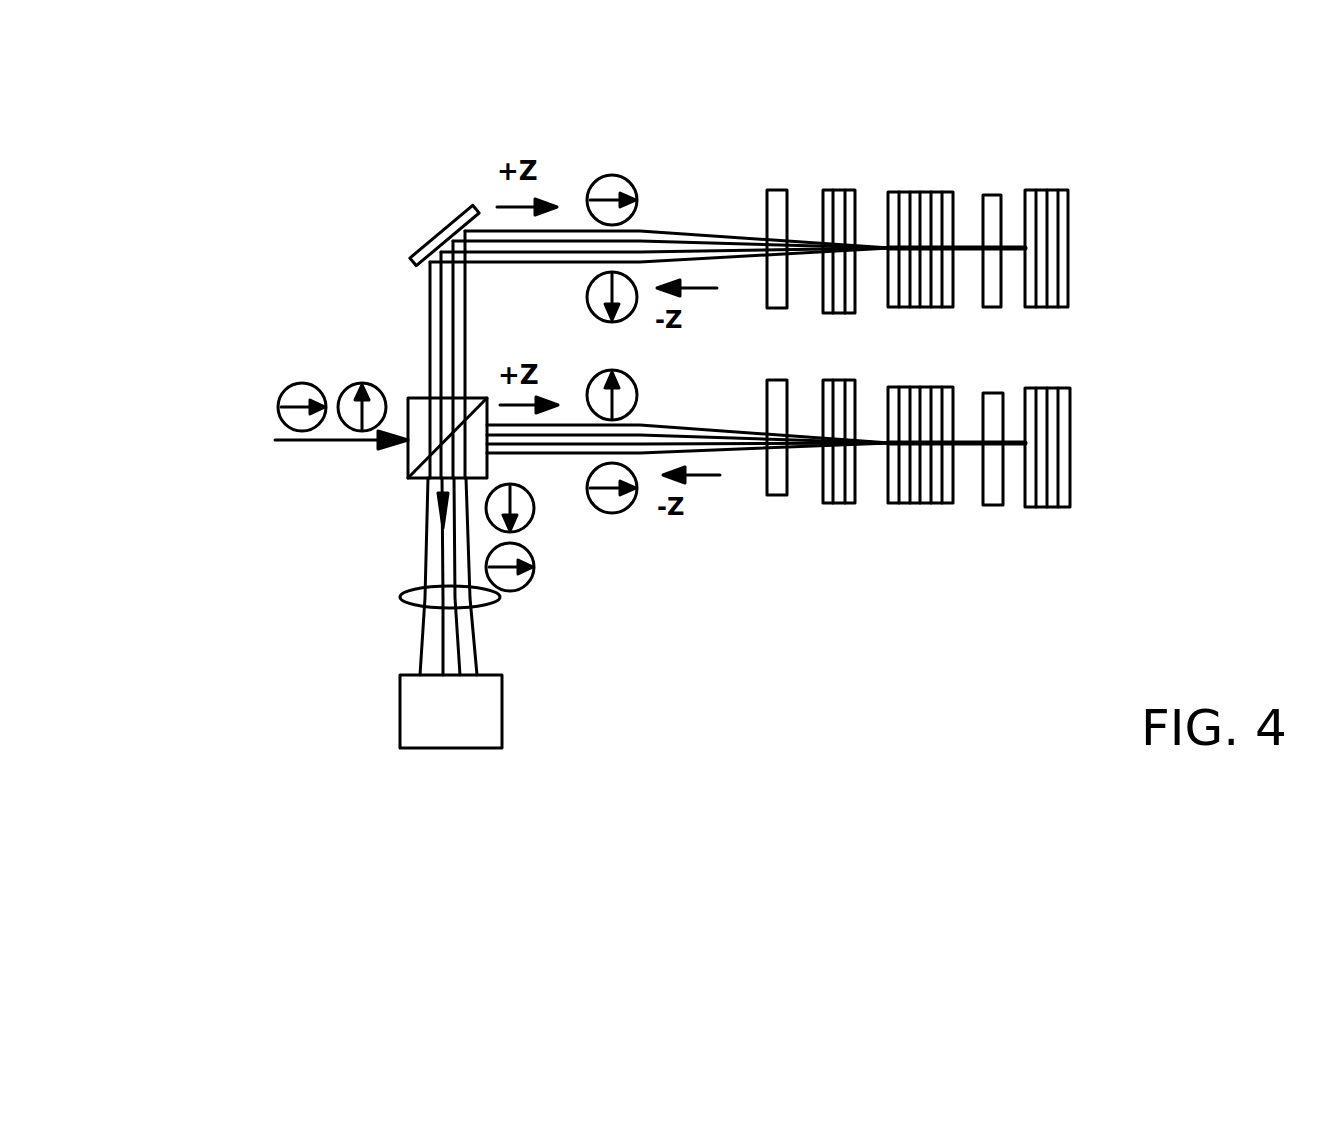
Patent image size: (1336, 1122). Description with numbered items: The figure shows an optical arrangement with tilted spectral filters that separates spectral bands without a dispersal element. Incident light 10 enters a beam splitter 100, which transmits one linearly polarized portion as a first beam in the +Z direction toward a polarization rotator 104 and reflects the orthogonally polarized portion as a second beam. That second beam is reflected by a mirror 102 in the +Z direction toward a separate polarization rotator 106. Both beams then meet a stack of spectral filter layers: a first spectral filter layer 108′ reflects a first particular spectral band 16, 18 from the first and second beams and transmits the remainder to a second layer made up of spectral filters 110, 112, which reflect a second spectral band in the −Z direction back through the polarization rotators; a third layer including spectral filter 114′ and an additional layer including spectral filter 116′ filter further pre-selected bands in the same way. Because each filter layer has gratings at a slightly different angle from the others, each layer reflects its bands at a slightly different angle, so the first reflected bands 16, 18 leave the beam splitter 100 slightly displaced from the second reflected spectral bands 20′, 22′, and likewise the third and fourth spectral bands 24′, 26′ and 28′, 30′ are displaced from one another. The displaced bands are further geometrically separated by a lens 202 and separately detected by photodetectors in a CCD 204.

The incident light 10 is at (307, 428).
The first particular spectral band 16 is at (643, 453).
The first particular spectral band 18 is at (465, 308).
The second reflected spectral band 20′ is at (597, 455).
The second reflected spectral band 22′ is at (453, 340).
The third spectral band 24′ is at (553, 435).
The third spectral band 26′ is at (441, 372).
The fourth spectral band 28′ is at (533, 428).
The fourth spectral band 30′ is at (430, 392).
The beam splitter 100 is at (403, 478).
The mirror 102 is at (425, 246).
The polarization rotator 104 is at (772, 497).
The polarization rotator 106 is at (777, 190).
The first spectral filter layer 108′ is at (835, 190).
The spectral filter 110 is at (913, 507).
The spectral filter 112 is at (915, 192).
The spectral filter 114′ is at (990, 195).
The spectral filter 116′ is at (1050, 190).
The lens 202 is at (397, 600).
The CCD 204 is at (397, 750).